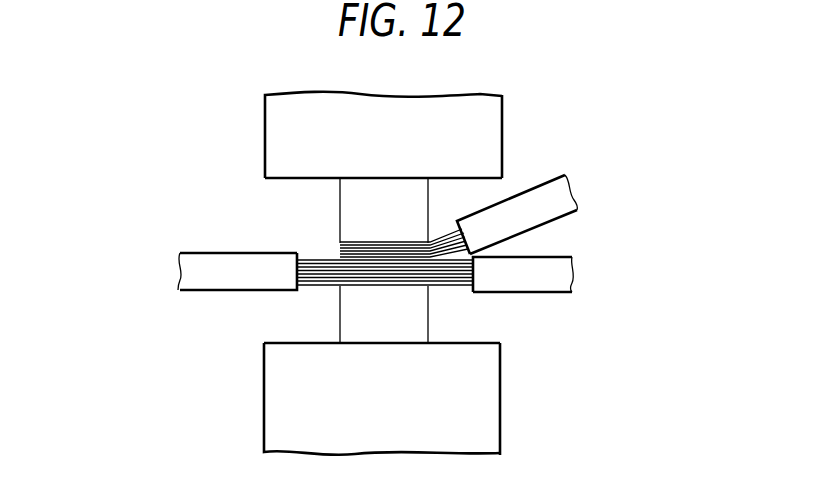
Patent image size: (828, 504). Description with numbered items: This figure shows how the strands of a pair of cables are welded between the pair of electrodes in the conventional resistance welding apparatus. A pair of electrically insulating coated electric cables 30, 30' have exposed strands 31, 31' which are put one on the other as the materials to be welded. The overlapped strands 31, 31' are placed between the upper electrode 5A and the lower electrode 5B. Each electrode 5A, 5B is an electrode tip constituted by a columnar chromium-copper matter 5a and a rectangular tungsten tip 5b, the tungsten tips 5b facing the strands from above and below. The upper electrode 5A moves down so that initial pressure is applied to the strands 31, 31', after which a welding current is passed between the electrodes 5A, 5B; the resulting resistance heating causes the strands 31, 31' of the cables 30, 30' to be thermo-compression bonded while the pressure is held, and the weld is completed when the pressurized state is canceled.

The upper electrode 5A is at (264, 137).
The lower electrode 5B is at (264, 418).
The columnar chromium-copper matter 5a is at (503, 113).
The rectangular tungsten tip 5b is at (338, 198).
The electrically insulating coated electric cable 30 is at (237, 312).
The electrically insulating coated electric cable 30' is at (547, 183).
The strand 31 is at (435, 308).
The strand 31' is at (351, 233).